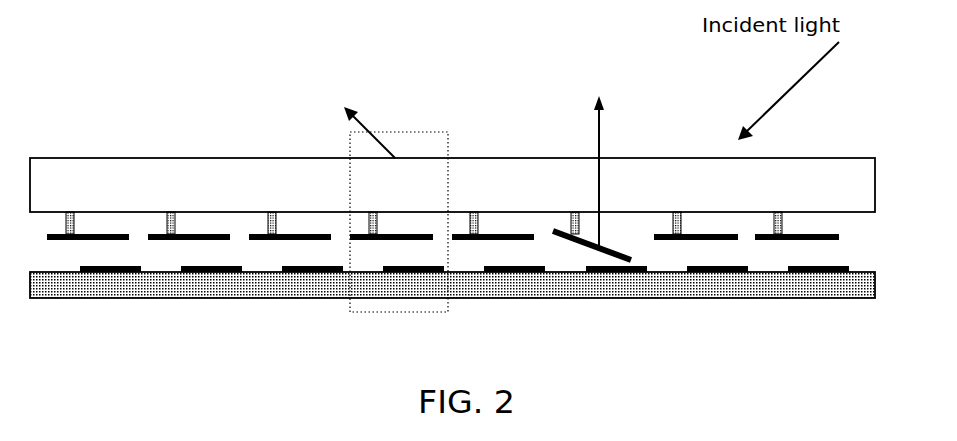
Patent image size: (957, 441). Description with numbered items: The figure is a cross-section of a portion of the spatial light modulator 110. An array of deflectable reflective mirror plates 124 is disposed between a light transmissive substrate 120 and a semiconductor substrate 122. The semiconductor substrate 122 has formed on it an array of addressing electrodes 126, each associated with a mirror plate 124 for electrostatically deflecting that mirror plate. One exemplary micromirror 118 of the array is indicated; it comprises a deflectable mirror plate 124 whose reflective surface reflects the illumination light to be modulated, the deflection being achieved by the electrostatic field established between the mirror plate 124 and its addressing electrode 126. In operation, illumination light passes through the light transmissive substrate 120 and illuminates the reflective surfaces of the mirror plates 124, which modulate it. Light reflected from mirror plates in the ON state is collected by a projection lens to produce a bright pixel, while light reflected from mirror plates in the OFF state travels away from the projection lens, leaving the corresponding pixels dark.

The spatial light modulator 110 is at (255, 82).
The micromirror 118 is at (407, 132).
The light transmissive substrate 120 is at (165, 157).
The semiconductor substrate 122 is at (166, 300).
The deflectable reflective mirror plate 124 is at (397, 234).
The addressing electrode 126 is at (423, 272).